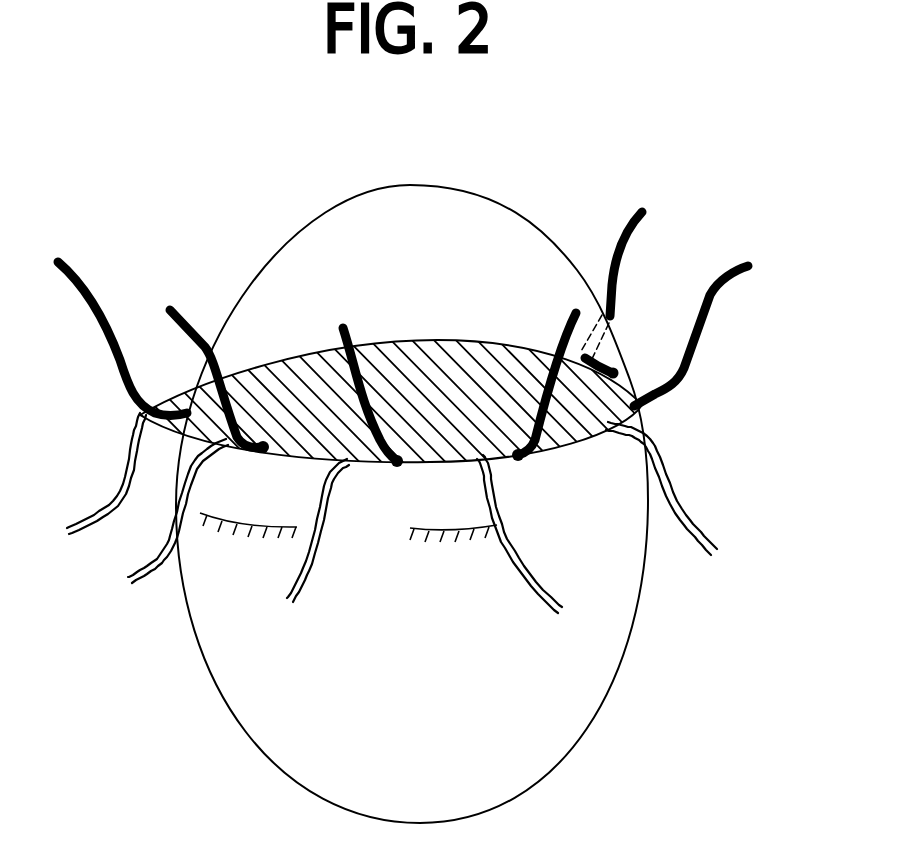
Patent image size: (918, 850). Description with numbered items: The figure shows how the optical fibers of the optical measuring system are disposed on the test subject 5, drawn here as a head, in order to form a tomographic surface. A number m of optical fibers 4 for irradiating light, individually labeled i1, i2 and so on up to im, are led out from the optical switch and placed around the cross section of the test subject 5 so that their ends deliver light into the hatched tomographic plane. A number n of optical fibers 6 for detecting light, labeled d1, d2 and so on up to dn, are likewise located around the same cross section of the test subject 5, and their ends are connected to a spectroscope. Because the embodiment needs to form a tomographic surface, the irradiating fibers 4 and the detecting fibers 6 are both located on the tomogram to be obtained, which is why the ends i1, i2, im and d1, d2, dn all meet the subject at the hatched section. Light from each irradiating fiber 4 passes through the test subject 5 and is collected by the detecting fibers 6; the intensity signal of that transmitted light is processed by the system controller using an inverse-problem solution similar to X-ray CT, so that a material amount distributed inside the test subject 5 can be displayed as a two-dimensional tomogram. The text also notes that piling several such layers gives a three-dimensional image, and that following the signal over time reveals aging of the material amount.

The optical fibers for irradiating light 4 is at (420, 323).
The test subject 5 is at (477, 193).
The optical fibers for detecting light 6 is at (419, 541).
The light irradiation position 1 i1 is at (723, 357).
The light irradiation position 2 i2 is at (547, 365).
The light irradiation position m im is at (630, 276).
The light detection position 1 d1 is at (532, 557).
The light detection position 2 d2 is at (338, 530).
The light detection position n dn is at (689, 502).